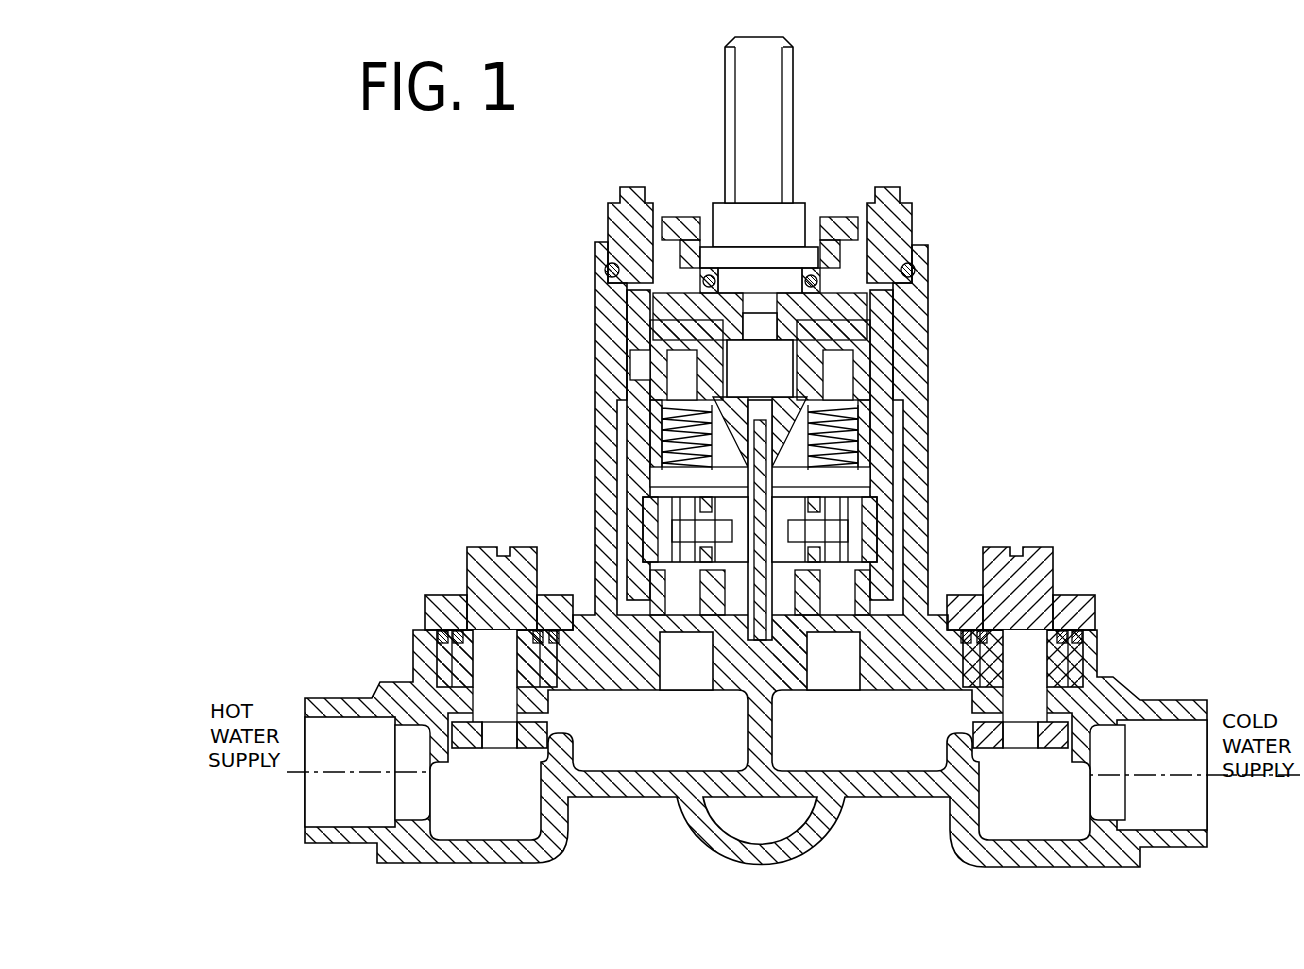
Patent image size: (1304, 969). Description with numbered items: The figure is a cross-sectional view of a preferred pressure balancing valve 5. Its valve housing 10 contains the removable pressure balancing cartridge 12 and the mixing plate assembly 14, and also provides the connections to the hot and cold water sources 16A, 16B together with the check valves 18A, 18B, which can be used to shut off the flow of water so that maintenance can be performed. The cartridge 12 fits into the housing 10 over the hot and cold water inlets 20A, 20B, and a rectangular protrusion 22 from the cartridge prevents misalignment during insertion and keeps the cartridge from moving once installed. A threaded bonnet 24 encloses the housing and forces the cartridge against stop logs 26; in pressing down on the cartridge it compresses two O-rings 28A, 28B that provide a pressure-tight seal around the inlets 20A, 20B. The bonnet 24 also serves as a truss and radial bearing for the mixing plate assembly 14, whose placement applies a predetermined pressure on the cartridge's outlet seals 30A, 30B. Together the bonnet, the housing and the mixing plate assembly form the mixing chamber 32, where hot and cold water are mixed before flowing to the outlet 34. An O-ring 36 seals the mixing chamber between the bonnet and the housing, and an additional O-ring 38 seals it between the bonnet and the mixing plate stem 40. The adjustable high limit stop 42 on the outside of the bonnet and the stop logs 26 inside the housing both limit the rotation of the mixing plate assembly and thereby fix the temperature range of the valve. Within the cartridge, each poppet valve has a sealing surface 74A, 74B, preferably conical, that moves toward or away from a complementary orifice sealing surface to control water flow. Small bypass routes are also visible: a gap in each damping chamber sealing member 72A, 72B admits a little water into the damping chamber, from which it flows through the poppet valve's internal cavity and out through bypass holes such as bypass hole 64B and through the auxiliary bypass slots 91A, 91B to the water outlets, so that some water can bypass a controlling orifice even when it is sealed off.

The pressure balancing valve 5 is at (972, 118).
The valve housing 10 is at (917, 262).
The pressure balancing cartridge 12 is at (887, 439).
The mixing plate assembly 14 is at (843, 342).
The hot water source 16A is at (330, 796).
The cold water source 16B is at (1180, 806).
The check valve 18A is at (490, 572).
The check valve 18B is at (1040, 590).
The hot water inlet 20A is at (684, 678).
The cold water inlet 20B is at (837, 678).
The rectangular protrusion 22 is at (794, 678).
The threaded bonnet 24 is at (903, 207).
The stop logs 26 is at (873, 345).
The O-ring 28A is at (640, 622).
The O-ring 28B is at (925, 605).
The outlet seal 30A is at (630, 402).
The outlet seal 30B is at (893, 395).
The mixing chamber 32 is at (670, 365).
The outlet 34 is at (750, 827).
The O-ring 36 is at (610, 268).
The O-ring 38 is at (810, 270).
The mixing plate stem 40 is at (770, 118).
The adjustable high limit stop 42 is at (675, 220).
The bypass hole 64B is at (772, 548).
The damping chamber sealing member 72A is at (705, 528).
The damping chamber sealing member 72B is at (790, 530).
The sealing surface 74A is at (706, 447).
The sealing surface 74B is at (832, 470).
The auxiliary bypass slot 91A is at (712, 492).
The auxiliary bypass slot 91B is at (812, 495).